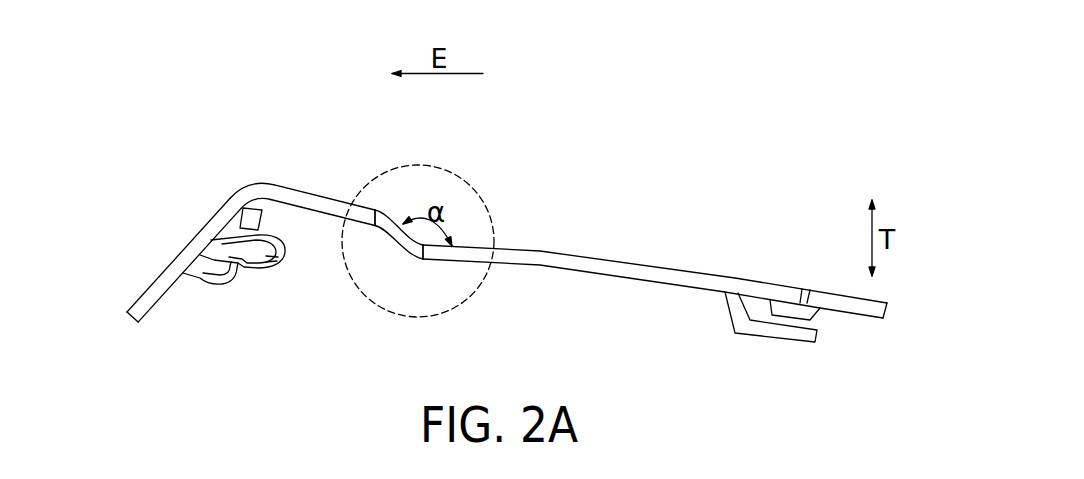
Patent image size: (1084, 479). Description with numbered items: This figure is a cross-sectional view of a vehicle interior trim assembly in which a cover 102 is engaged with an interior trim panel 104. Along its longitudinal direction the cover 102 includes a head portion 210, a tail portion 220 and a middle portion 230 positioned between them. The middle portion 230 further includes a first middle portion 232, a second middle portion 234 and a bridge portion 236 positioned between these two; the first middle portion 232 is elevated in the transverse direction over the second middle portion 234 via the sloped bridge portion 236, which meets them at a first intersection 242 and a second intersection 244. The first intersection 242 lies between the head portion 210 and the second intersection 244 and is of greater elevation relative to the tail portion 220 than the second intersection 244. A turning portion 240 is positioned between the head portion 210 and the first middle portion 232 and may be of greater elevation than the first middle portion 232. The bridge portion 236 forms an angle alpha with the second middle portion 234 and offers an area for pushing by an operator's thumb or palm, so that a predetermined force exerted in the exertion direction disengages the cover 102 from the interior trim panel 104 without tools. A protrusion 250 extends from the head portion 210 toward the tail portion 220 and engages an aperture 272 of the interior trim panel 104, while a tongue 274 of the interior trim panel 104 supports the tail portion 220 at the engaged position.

The cover 102 is at (579, 299).
The interior trim panel 104 is at (145, 322).
The head portion 210 is at (191, 222).
The tail portion 220 is at (753, 262).
The middle portion 230 is at (466, 179).
The first middle portion 232 is at (365, 198).
The second middle portion 234 is at (477, 234).
The bridge portion 236 is at (421, 225).
The turning portion 240 is at (247, 177).
The first intersection 242 is at (384, 204).
The second intersection 244 is at (431, 268).
The protrusion 250 is at (255, 268).
The aperture 272 is at (267, 228).
The tongue 274 is at (788, 312).